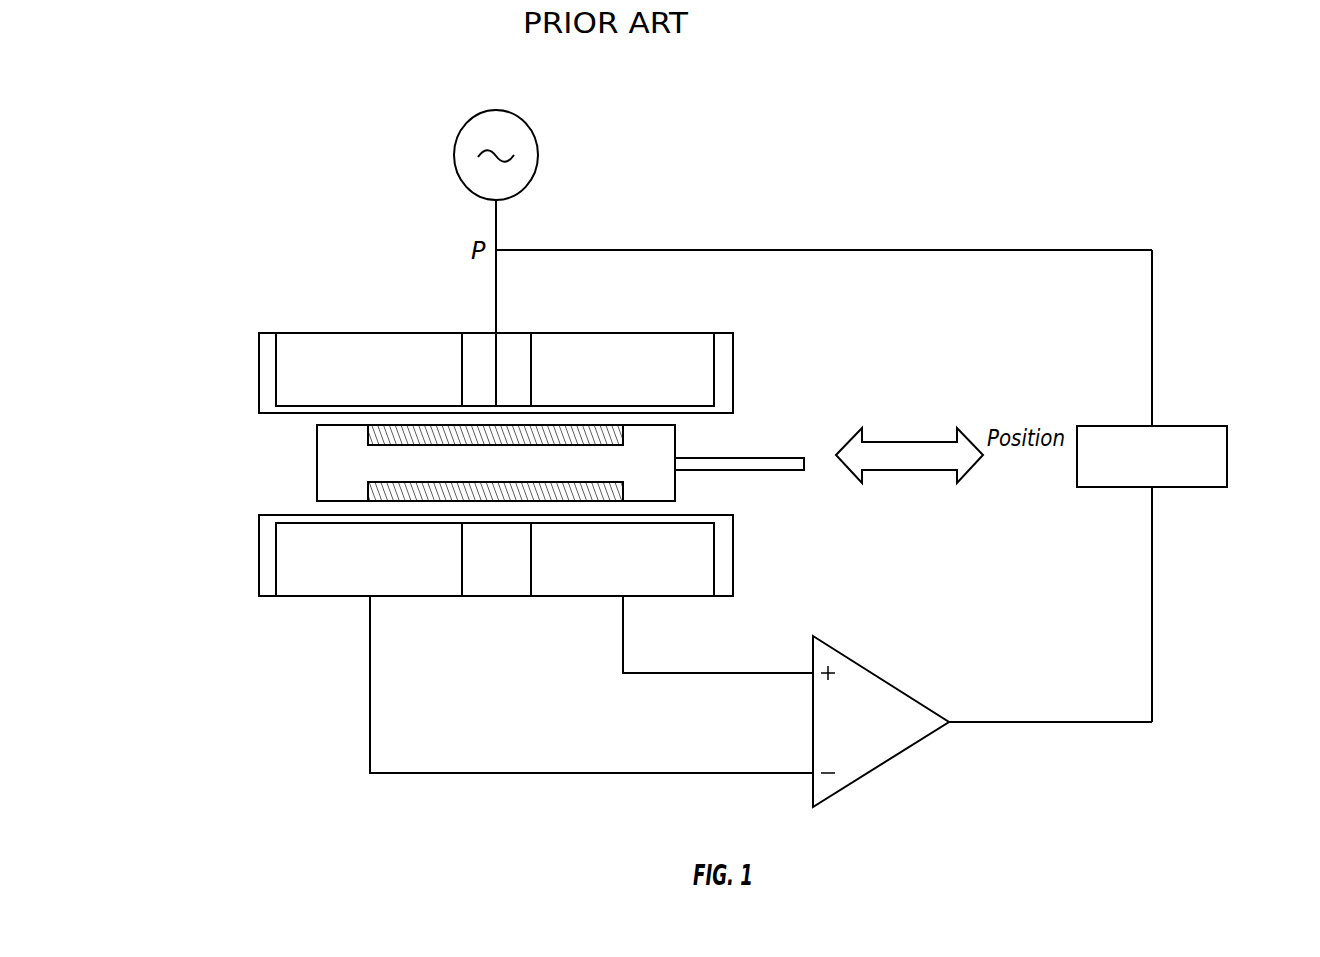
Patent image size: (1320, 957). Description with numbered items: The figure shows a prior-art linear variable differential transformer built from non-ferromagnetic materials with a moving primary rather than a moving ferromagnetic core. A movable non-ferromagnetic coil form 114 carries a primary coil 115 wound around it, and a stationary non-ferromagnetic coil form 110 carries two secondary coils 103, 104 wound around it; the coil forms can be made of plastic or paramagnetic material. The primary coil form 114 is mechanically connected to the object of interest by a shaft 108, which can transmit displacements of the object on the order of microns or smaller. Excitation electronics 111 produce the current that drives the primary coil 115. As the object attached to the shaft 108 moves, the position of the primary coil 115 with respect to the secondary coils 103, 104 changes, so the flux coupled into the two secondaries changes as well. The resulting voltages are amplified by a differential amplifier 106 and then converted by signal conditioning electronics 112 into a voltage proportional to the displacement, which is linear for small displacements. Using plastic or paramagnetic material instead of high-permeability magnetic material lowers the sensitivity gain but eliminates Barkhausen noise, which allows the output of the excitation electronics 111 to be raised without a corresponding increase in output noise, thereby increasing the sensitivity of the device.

The secondary coil 103 is at (691, 325).
The secondary coil 104 is at (298, 325).
The differential amplifier 106 is at (881, 721).
The shaft 108 is at (764, 482).
The stationary non-ferromagnetic coil form 110 is at (738, 370).
The excitation electronics 111 is at (450, 120).
The signal conditioning electronics 112 is at (1152, 456).
The movable non-ferromagnetic coil form 114 is at (400, 471).
The primary coil 115 is at (502, 440).